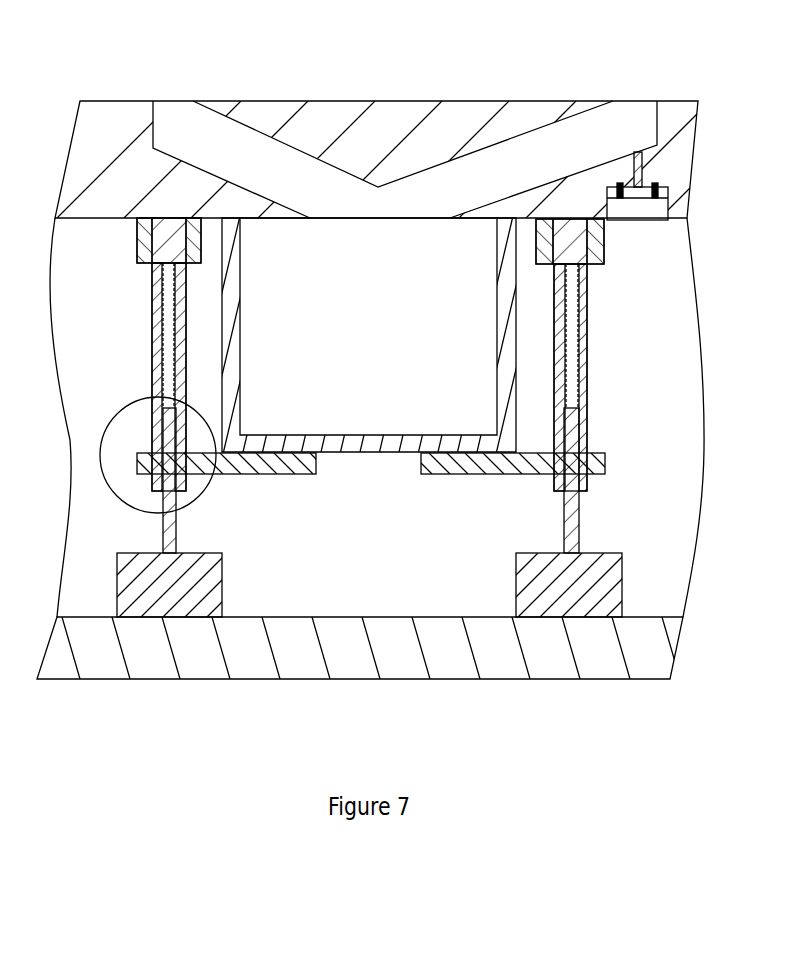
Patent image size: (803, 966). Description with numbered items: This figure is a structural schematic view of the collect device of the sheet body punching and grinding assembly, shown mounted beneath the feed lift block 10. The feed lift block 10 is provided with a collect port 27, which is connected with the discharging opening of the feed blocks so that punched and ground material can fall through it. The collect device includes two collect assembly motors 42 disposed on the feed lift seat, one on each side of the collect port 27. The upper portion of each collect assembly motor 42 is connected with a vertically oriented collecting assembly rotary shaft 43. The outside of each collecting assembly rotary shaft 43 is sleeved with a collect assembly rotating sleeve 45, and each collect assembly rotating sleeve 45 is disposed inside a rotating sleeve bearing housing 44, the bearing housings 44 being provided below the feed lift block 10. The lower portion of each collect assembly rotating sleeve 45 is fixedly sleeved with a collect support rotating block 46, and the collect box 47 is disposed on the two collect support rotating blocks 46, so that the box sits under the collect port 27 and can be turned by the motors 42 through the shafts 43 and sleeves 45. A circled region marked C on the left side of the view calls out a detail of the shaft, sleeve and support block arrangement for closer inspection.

The feed lift block 10 is at (372, 125).
The collect port 27 is at (195, 135).
The collect assembly motor 42 is at (182, 575).
The collecting assembly rotary shaft 43 is at (587, 512).
The rotating sleeve bearing housing 44 is at (548, 218).
The collect assembly rotating sleeve 45 is at (587, 380).
The collect support rotating block 46 is at (462, 466).
The collect box 47 is at (350, 443).
The detail region C is at (130, 397).